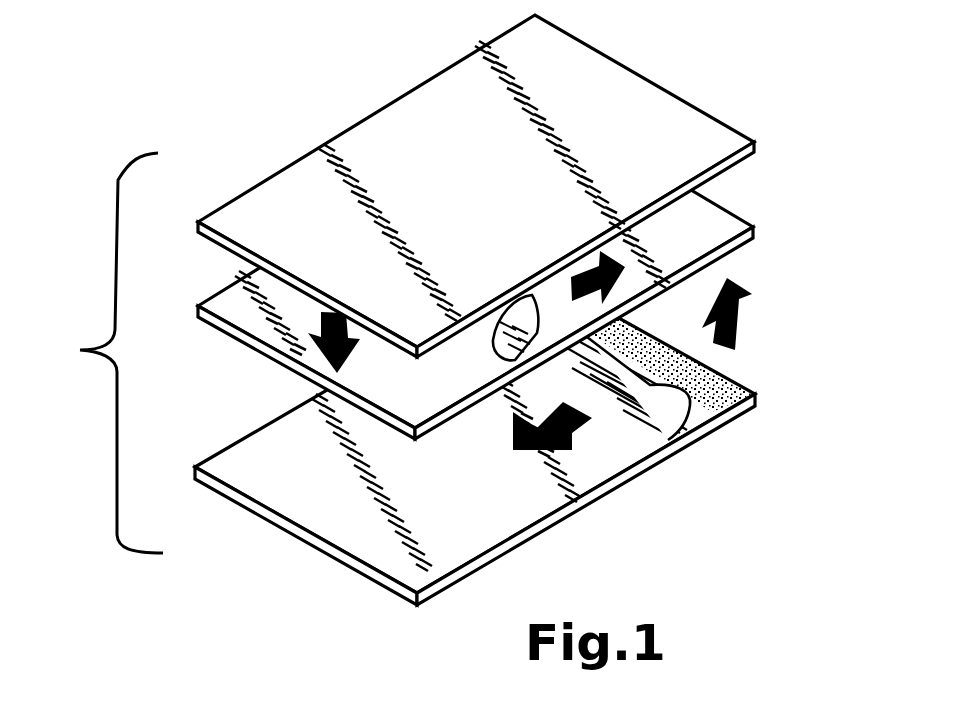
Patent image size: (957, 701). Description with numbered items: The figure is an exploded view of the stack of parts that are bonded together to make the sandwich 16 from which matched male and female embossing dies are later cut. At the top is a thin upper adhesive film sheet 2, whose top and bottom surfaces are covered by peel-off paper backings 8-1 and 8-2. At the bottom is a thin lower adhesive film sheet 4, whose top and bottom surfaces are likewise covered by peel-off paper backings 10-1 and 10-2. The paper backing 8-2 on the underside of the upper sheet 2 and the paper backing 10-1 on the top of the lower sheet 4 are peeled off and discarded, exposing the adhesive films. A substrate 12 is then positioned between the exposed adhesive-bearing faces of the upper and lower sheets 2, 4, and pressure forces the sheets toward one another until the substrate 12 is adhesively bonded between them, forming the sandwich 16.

The upper adhesive film sheet 2 is at (762, 152).
The lower adhesive film sheet 4 is at (760, 398).
The peel-off paper backing 8-1 is at (595, 97).
The peel-off paper backing 8-2 is at (530, 293).
The peel-off paper backing 10-1 is at (607, 457).
The peel-off paper backing 10-2 is at (463, 573).
The substrate 12 is at (720, 232).
The sandwich 16 is at (102, 353).